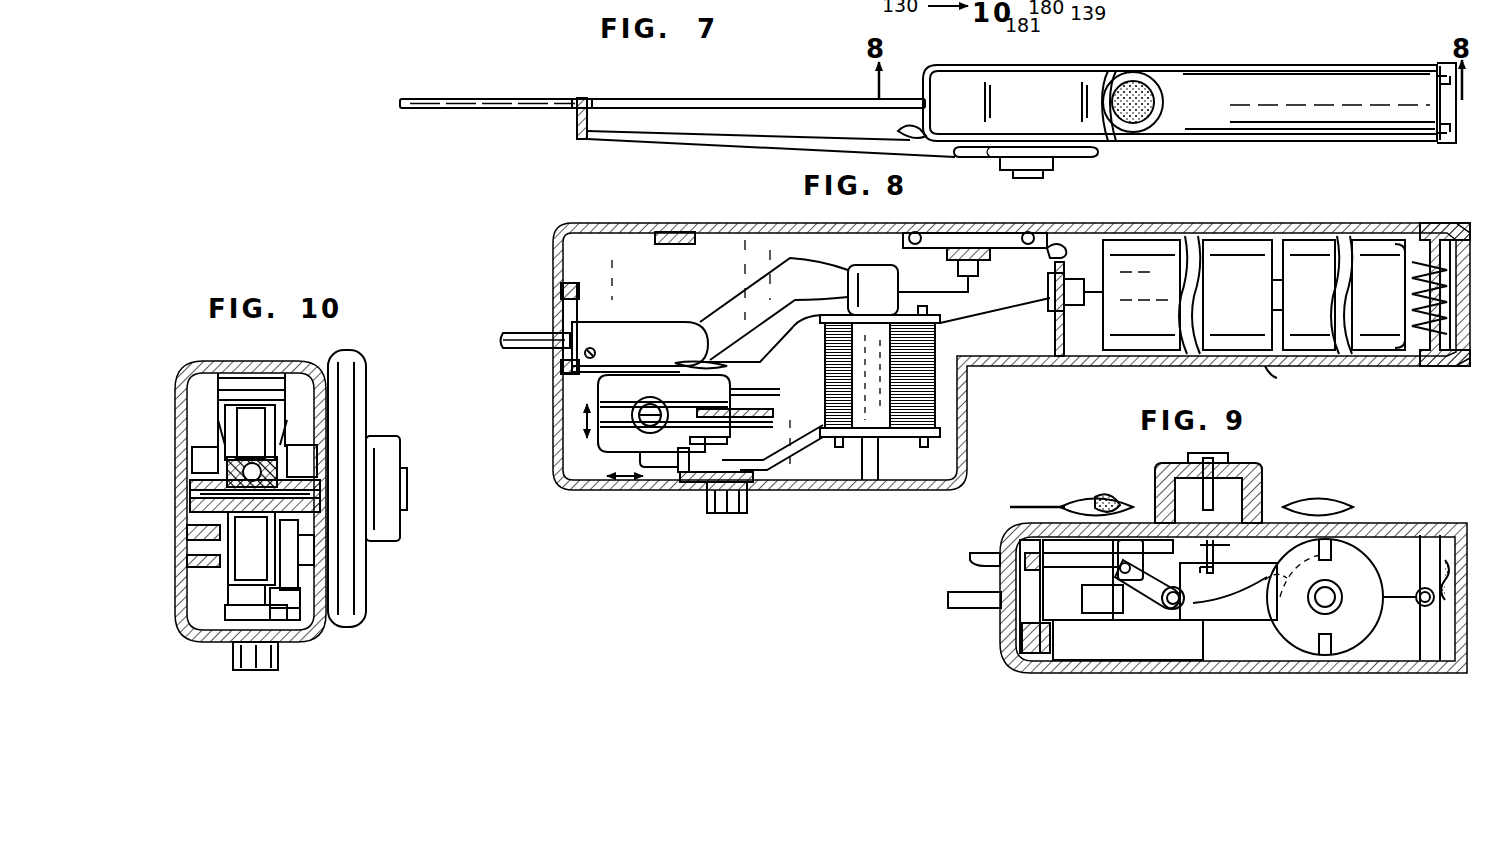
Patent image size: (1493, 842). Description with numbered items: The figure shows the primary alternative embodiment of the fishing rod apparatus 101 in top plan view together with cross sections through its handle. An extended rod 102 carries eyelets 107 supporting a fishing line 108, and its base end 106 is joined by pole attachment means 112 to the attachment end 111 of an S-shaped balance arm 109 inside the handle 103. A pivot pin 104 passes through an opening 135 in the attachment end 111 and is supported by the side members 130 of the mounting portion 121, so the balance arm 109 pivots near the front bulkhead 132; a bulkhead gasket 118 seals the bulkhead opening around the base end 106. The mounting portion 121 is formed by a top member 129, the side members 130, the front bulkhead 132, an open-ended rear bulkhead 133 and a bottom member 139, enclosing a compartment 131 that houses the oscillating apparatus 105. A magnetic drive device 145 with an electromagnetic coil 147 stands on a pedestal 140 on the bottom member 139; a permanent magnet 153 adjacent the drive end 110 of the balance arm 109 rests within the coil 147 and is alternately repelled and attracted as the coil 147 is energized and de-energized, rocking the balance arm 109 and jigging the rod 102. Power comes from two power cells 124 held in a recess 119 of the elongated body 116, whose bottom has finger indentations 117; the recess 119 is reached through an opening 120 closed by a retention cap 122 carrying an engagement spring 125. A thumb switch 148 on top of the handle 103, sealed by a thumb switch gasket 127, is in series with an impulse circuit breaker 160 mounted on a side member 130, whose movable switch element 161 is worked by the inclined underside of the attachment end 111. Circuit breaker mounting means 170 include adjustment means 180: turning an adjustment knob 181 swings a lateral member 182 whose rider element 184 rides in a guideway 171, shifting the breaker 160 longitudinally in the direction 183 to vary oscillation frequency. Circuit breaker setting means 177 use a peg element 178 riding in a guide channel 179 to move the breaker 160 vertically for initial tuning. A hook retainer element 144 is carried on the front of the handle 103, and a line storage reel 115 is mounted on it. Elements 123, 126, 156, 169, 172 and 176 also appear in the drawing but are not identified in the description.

In FIG. 7, the fishing rod apparatus 101 is at (1243, 60).
In FIG. 8, the fishing rod apparatus 101 is at (512, 230).
In FIG. 10, the fishing rod apparatus 101 is at (150, 350).
In FIG. 7, the extended rod 102 is at (661, 100).
In FIG. 8, the extended rod 102 is at (508, 328).
In FIG. 9, the extended rod 102 is at (950, 610).
In FIG. 10, the extended rod 102 is at (240, 470).
In FIG. 7, the handle 103 is at (1333, 54).
In FIG. 8, the handle 103 is at (1248, 228).
In FIG. 9, the handle 103 is at (1428, 523).
In FIG. 10, the handle 103 is at (172, 378).
In FIG. 8, the pivot pin 104 is at (631, 356).
In FIG. 9, the pivot pin 104 is at (1030, 630).
In FIG. 10, the pivot pin 104 is at (230, 494).
In FIG. 8, the oscillating apparatus 105 is at (740, 258).
In FIG. 7, the base end 106 is at (924, 100).
In FIG. 8, the base end 106 is at (506, 348).
In FIG. 7, the eyelets 107 is at (578, 140).
In FIG. 7, the fishing line 108 is at (755, 146).
In FIG. 9, the fishing line 108 is at (1030, 506).
In FIG. 8, the balance arm 109 is at (717, 310).
In FIG. 9, the balance arm 109 is at (1230, 618).
In FIG. 10, the balance arm 109 is at (228, 418).
In FIG. 8, the drive end 110 is at (862, 265).
In FIG. 9, the drive end 110 is at (1292, 573).
In FIG. 8, the attachment end 111 is at (596, 330).
In FIG. 9, the attachment end 111 is at (1030, 603).
In FIG. 8, the pole attachment means 112 is at (566, 352).
In FIG. 7, the line storage reel 115 is at (1082, 158).
In FIG. 9, the line storage reel 115 is at (1330, 500).
In FIG. 10, the line storage reel 115 is at (366, 385).
In FIG. 7, the elongated body portion 116 is at (1358, 80).
In FIG. 8, the elongated body portion 116 is at (1188, 358).
In FIG. 9, the elongated body portion 116 is at (1420, 676).
In FIG. 8, the finger indentations 117 is at (1280, 368).
In FIG. 8, the bulkhead gasket 118 is at (562, 322).
In FIG. 8, the recess 119 is at (1425, 345).
In FIG. 8, the opening 120 is at (1448, 345).
In FIG. 7, the mounting portion 121 is at (1052, 80).
In FIG. 8, the mounting portion 121 is at (906, 494).
In FIG. 9, the mounting portion 121 is at (1215, 672).
In FIG. 10, the mounting portion 121 is at (207, 615).
In FIG. 7, the retention cap 122 is at (1440, 64).
In FIG. 8, the retention cap 122 is at (1448, 218).
In FIG. 7, the cap lip 123 is at (1440, 84).
In FIG. 8, the power cells 124 is at (1162, 250).
In FIG. 8, the engagement spring 125 is at (1418, 290).
In FIG. 8, the contact bolt 126 is at (1086, 292).
In FIG. 7, the thumb switch gasket 127 is at (1146, 102).
In FIG. 8, the thumb switch gasket 127 is at (972, 232).
In FIG. 9, the thumb switch gasket 127 is at (1450, 535).
In FIG. 7, the top member 129 is at (1010, 80).
In FIG. 8, the top member 129 is at (622, 228).
In FIG. 10, the top member 129 is at (255, 360).
In FIG. 7, the side members 130 is at (972, 68).
In FIG. 9, the side members 130 is at (1268, 523).
In FIG. 10, the side members 130 is at (328, 406).
In FIG. 8, the enclosed compartment 131 is at (800, 490).
In FIG. 10, the enclosed compartment 131 is at (300, 390).
In FIG. 7, the front bulkhead 132 is at (924, 80).
In FIG. 8, the front bulkhead 132 is at (553, 257).
In FIG. 9, the front bulkhead 132 is at (1000, 578).
In FIG. 8, the rear bulkhead 133 is at (960, 410).
In FIG. 9, the rear bulkhead 133 is at (1407, 533).
In FIG. 8, the opening 135 is at (596, 350).
In FIG. 10, the opening 135 is at (195, 483).
In FIG. 8, the bottom member 139 is at (838, 492).
In FIG. 10, the bottom member 139 is at (222, 642).
In FIG. 8, the pedestal 140 is at (876, 470).
In FIG. 9, the pedestal 140 is at (1340, 560).
In FIG. 10, the pedestal 140 is at (200, 635).
In FIG. 7, the hook retainer element 144 is at (900, 128).
In FIG. 8, the hook retainer element 144 is at (998, 522).
In FIG. 9, the hook retainer element 144 is at (980, 552).
In FIG. 8, the magnetic drive device 145 is at (945, 418).
In FIG. 9, the magnetic drive device 145 is at (1278, 643).
In FIG. 8, the electromagnetic coil 147 is at (958, 385).
In FIG. 9, the electromagnetic coil 147 is at (1305, 648).
In FIG. 7, the thumb switch 148 is at (1140, 88).
In FIG. 8, the thumb switch 148 is at (956, 228).
In FIG. 9, the thumb switch 148 is at (1452, 640).
In FIG. 8, the permanent magnet 153 is at (900, 350).
In FIG. 9, the permanent magnet 153 is at (1336, 597).
In FIG. 8, the contact plate 156 is at (1416, 246).
In FIG. 8, the impulse circuit breaker 160 is at (732, 386).
In FIG. 9, the impulse circuit breaker 160 is at (1080, 622).
In FIG. 10, the impulse circuit breaker 160 is at (224, 594).
In FIG. 8, the movable switch element 161 is at (645, 372).
In FIG. 10, the movable switch element 161 is at (235, 510).
In FIG. 8, the contact 169 is at (1357, 246).
In FIG. 9, the contact 169 is at (1414, 584).
In FIG. 8, the circuit breaker mounting means 170 is at (570, 418).
In FIG. 8, the guideway 171 is at (727, 441).
In FIG. 9, the guideway 171 is at (1130, 538).
In FIG. 8, the contact plate 172 is at (773, 412).
In FIG. 9, the contact plate 172 is at (1218, 548).
In FIG. 10, the contact plate 172 is at (200, 562).
In FIG. 8, the movement direction 176 is at (577, 432).
In FIG. 8, the circuit breaker setting means 177 is at (639, 406).
In FIG. 9, the circuit breaker setting means 177 is at (1095, 500).
In FIG. 10, the circuit breaker setting means 177 is at (330, 572).
In FIG. 8, the peg element 178 is at (630, 460).
In FIG. 9, the peg element 178 is at (1085, 560).
In FIG. 10, the peg element 178 is at (295, 548).
In FIG. 8, the guide channel 179 is at (680, 418).
In FIG. 10, the guide channel 179 is at (318, 575).
In FIG. 8, the adjustment means 180 is at (712, 532).
In FIG. 9, the adjustment means 180 is at (1165, 608).
In FIG. 10, the adjustment means 180 is at (238, 673).
In FIG. 8, the adjustment knob 181 is at (740, 530).
In FIG. 10, the adjustment knob 181 is at (260, 672).
In FIG. 8, the lateral member 182 is at (700, 482).
In FIG. 9, the lateral member 182 is at (1155, 608).
In FIG. 10, the lateral member 182 is at (283, 622).
In FIG. 8, the direction of movement 183 is at (620, 480).
In FIG. 8, the rider element 184 is at (680, 474).
In FIG. 9, the rider element 184 is at (1131, 586).
In FIG. 10, the rider element 184 is at (293, 605).